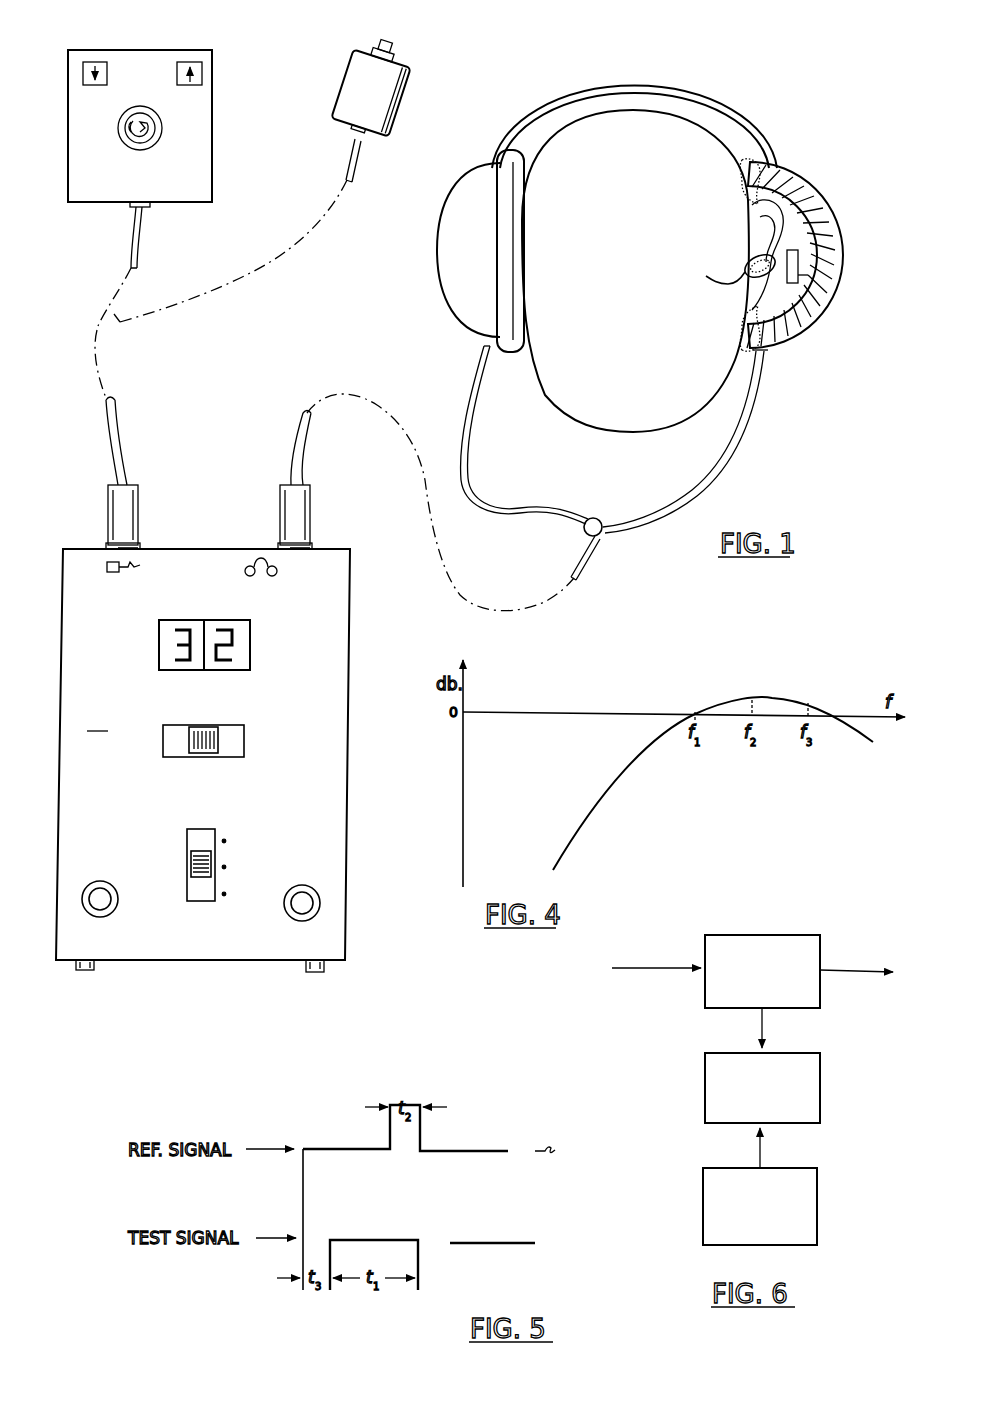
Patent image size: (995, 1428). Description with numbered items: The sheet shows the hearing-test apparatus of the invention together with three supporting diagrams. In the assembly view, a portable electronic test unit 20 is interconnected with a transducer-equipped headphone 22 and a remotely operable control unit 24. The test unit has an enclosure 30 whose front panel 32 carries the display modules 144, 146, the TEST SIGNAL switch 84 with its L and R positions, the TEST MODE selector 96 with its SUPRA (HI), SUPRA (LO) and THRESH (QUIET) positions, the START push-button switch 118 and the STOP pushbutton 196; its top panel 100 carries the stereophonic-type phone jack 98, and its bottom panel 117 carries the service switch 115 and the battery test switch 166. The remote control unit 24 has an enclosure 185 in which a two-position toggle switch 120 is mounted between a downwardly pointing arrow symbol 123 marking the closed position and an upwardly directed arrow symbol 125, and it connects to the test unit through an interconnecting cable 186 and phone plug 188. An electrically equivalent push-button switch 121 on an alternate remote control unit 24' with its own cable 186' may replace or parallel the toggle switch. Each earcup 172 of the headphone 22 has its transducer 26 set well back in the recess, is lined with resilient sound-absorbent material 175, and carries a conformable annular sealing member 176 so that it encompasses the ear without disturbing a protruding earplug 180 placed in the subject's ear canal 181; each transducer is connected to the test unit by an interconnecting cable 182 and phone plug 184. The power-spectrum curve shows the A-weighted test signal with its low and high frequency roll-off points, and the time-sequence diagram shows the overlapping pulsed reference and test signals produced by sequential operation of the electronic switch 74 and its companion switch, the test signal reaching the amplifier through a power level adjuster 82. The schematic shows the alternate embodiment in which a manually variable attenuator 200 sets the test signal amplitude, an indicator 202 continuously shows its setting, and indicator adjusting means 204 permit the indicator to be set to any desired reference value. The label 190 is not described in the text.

In FIG. 1, the portable electronic test unit 20 is at (209, 702).
In FIG. 1, the transducer-equipped headphone 22 is at (767, 98).
In FIG. 1, the remote control unit 24 is at (173, 128).
In FIG. 1, the remote control unit 24' is at (400, 91).
In FIG. 1, the transducer 26 is at (833, 240).
In FIG. 1, the test unit enclosure 30 is at (364, 753).
In FIG. 1, the front panel 32 is at (97, 724).
In FIG. 1, the TEST SIGNAL switch 84 is at (244, 744).
In FIG. 1, the TEST MODE selector 96 is at (187, 840).
In FIG. 1, the stereophonic-type phone jack 98 is at (310, 550).
In FIG. 1, the top panel 100 is at (208, 547).
In FIG. 1, the service switch 115 is at (91, 971).
In FIG. 1, the bottom panel 117 is at (198, 962).
In FIG. 1, the START push-button switch 118 is at (85, 889).
In FIG. 1, the two-position toggle switch 120 is at (140, 106).
In FIG. 1, the two-position push-button switch 121 is at (376, 40).
In FIG. 1, the downwardly pointing arrow symbol 123 is at (103, 60).
In FIG. 1, the upwardly directed arrow symbol 125 is at (194, 60).
In FIG. 1, the display module 144 is at (181, 622).
In FIG. 1, the display module 146 is at (237, 622).
In FIG. 1, the battery test switch 166 is at (317, 972).
In FIG. 1, the earcup 172 is at (438, 230).
In FIG. 1, the resilient sound-absorbent material 175 is at (810, 313).
In FIG. 1, the annular sealing member 176 is at (517, 355).
In FIG. 1, the earplug 180 is at (748, 260).
In FIG. 1, the ear canal 181 is at (745, 271).
In FIG. 1, the interconnecting cable 182 is at (470, 500).
In FIG. 1, the phone plug 184 is at (310, 517).
In FIG. 1, the remote control unit enclosure 185 is at (213, 118).
In FIG. 1, the interconnecting cable 186 is at (173, 237).
In FIG. 1, the interconnecting cable 186' is at (381, 160).
In FIG. 1, the phone plug 188 is at (133, 507).
In FIG. 1, the left jack 190 is at (138, 547).
In FIG. 1, the STOP pushbutton 196 is at (319, 896).
In FIG. 6, the manually variable attenuator 200 is at (762, 971).
In FIG. 6, the indicator 202 is at (762, 1088).
In FIG. 6, the indicator adjusting means 204 is at (760, 1206).
In FIG. 6, the electronic switch 74 is at (646, 969).
In FIG. 6, the power level adjuster 82 is at (861, 973).